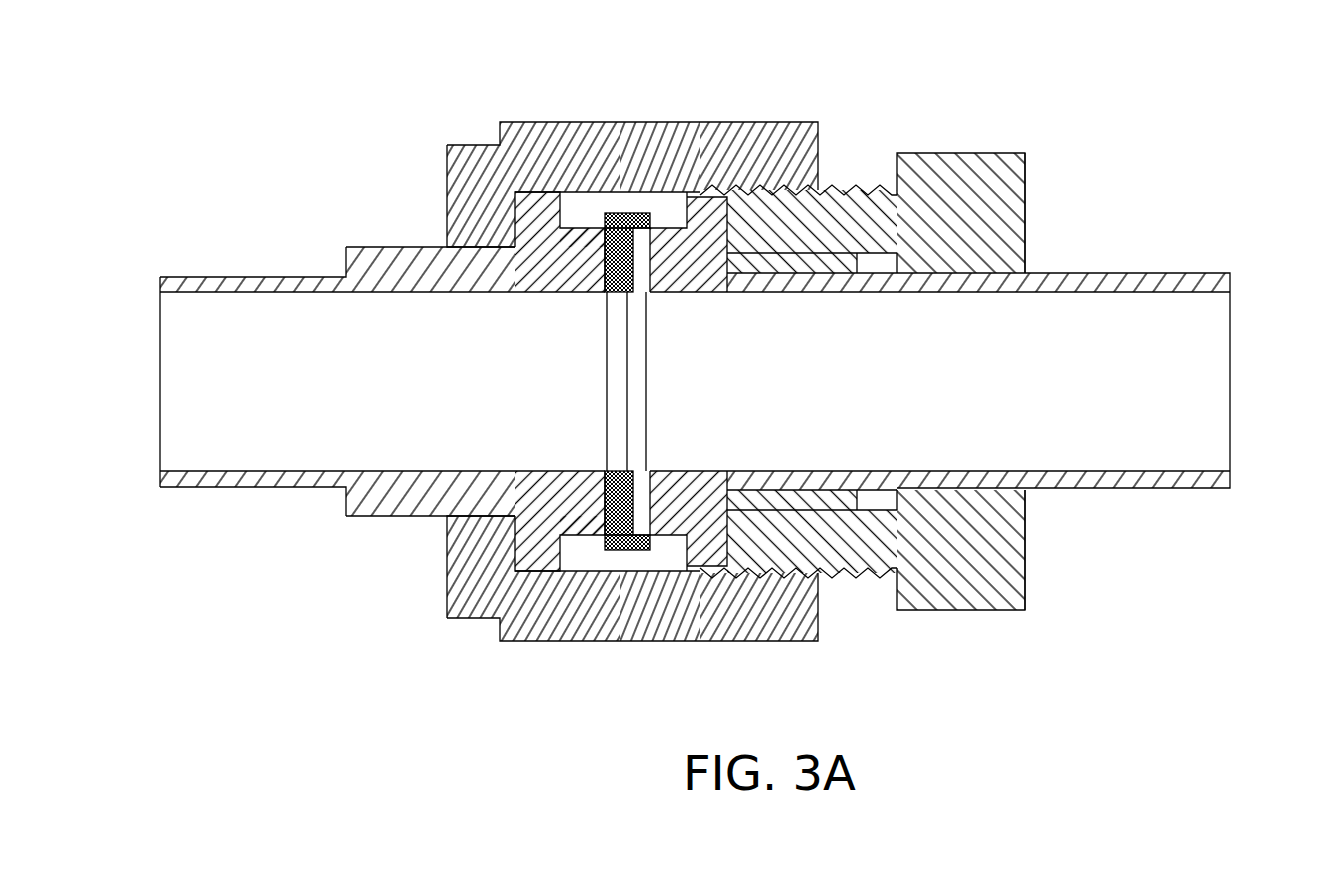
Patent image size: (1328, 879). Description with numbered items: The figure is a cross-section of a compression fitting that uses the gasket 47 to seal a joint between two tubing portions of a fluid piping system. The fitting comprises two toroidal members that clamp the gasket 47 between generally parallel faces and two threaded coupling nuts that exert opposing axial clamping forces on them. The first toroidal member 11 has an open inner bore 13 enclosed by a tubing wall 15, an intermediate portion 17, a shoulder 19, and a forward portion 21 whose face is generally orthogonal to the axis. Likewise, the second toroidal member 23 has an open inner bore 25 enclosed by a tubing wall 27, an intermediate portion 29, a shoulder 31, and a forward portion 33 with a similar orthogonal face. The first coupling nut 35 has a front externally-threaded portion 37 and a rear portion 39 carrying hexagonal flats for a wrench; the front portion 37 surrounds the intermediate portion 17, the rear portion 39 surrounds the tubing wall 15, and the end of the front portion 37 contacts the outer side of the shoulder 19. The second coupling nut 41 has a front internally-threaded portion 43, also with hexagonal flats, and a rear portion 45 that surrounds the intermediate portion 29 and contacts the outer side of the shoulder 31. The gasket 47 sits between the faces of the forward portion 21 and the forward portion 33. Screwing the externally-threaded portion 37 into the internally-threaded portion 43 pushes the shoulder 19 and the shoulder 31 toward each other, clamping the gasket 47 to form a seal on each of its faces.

The first toroidal member 11 is at (1201, 238).
The open inner bore 13 is at (1200, 370).
The tubing wall 15 is at (1150, 481).
The intermediate portion 17 is at (812, 381).
The shoulder 19 is at (694, 252).
The forward portion 21 is at (664, 253).
The second toroidal member 23 is at (222, 252).
The open inner bore 25 is at (190, 377).
The tubing wall 27 is at (252, 486).
The intermediate portion 29 is at (395, 265).
The shoulder 31 is at (540, 215).
The forward portion 33 is at (580, 258).
The first coupling nut 35 is at (1006, 120).
The front externally-threaded portion 37 is at (870, 205).
The rear portion 39 is at (1017, 208).
The second coupling nut 41 is at (537, 94).
The front internally-threaded portion 43 is at (710, 158).
The rear portion 45 is at (470, 210).
The gasket 47 is at (612, 408).